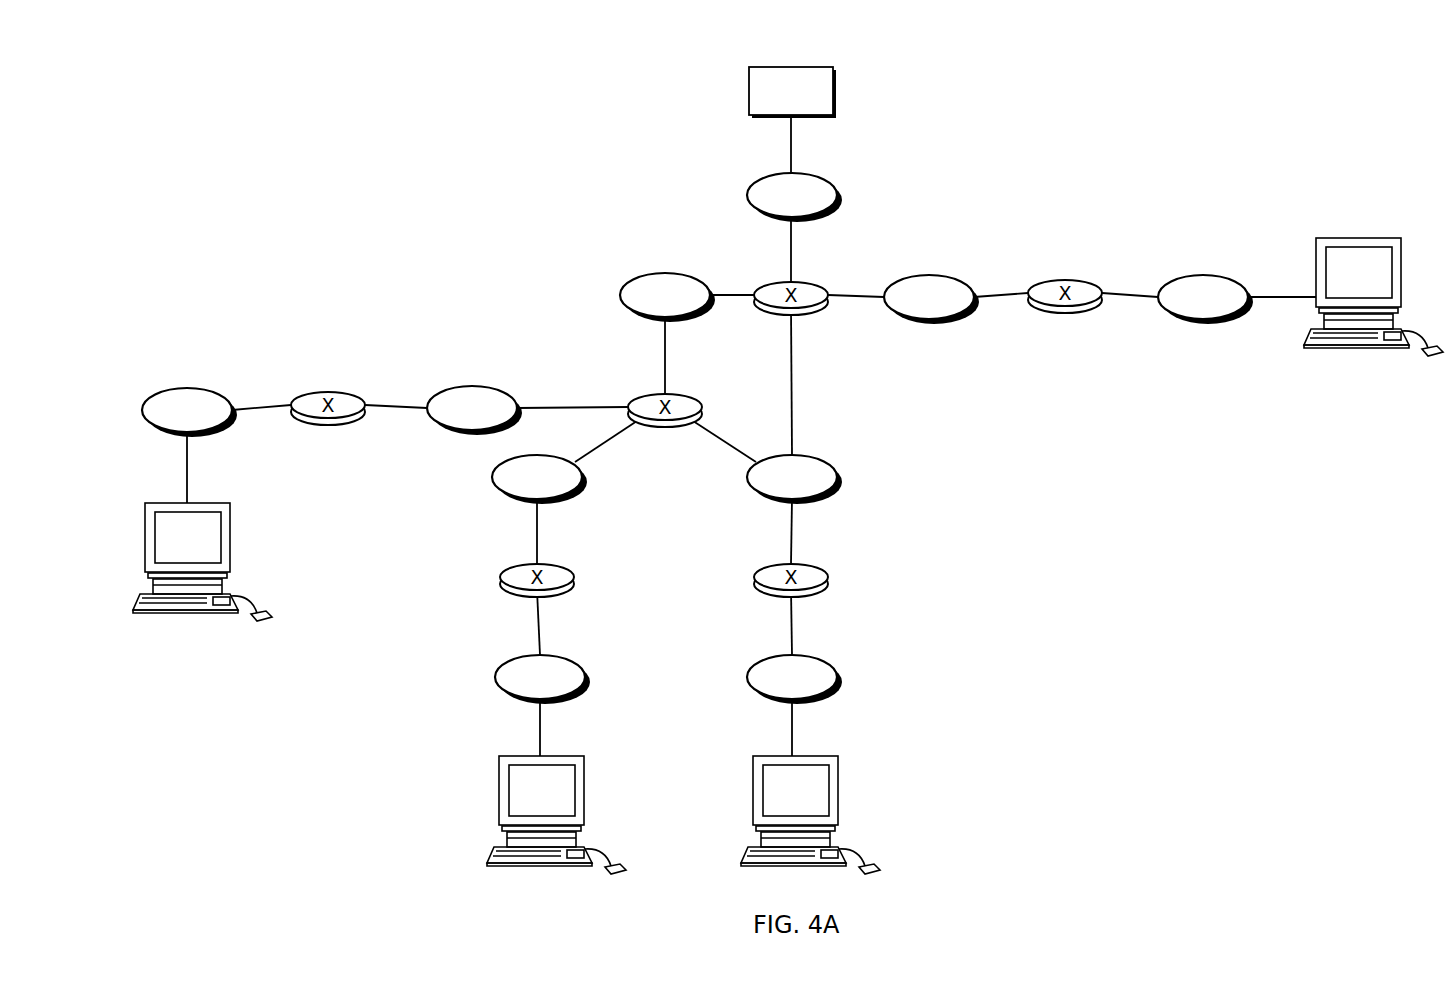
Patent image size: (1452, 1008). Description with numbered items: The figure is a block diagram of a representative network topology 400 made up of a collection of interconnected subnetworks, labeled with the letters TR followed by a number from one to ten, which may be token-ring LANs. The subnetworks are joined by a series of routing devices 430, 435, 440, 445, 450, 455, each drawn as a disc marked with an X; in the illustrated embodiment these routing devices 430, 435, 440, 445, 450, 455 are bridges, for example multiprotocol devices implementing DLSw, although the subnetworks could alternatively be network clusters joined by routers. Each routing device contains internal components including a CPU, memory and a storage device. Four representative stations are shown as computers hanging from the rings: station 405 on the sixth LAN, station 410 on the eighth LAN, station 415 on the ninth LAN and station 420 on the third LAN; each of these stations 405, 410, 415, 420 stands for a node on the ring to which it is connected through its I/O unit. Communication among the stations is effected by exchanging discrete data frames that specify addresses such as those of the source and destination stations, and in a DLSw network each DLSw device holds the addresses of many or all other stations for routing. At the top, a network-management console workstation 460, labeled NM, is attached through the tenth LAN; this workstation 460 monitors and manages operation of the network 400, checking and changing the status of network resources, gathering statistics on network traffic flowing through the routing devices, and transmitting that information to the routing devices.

The network topology 400 is at (1206, 74).
The station 405 is at (230, 537).
The station 410 is at (499, 787).
The station 415 is at (838, 790).
The station 420 is at (1344, 238).
The routing device 430 is at (322, 392).
The routing device 435 is at (656, 394).
The routing device 440 is at (516, 566).
The routing device 445 is at (818, 566).
The routing device 450 is at (778, 282).
The routing device 455 is at (1068, 280).
The network-management console workstation 460 is at (749, 91).